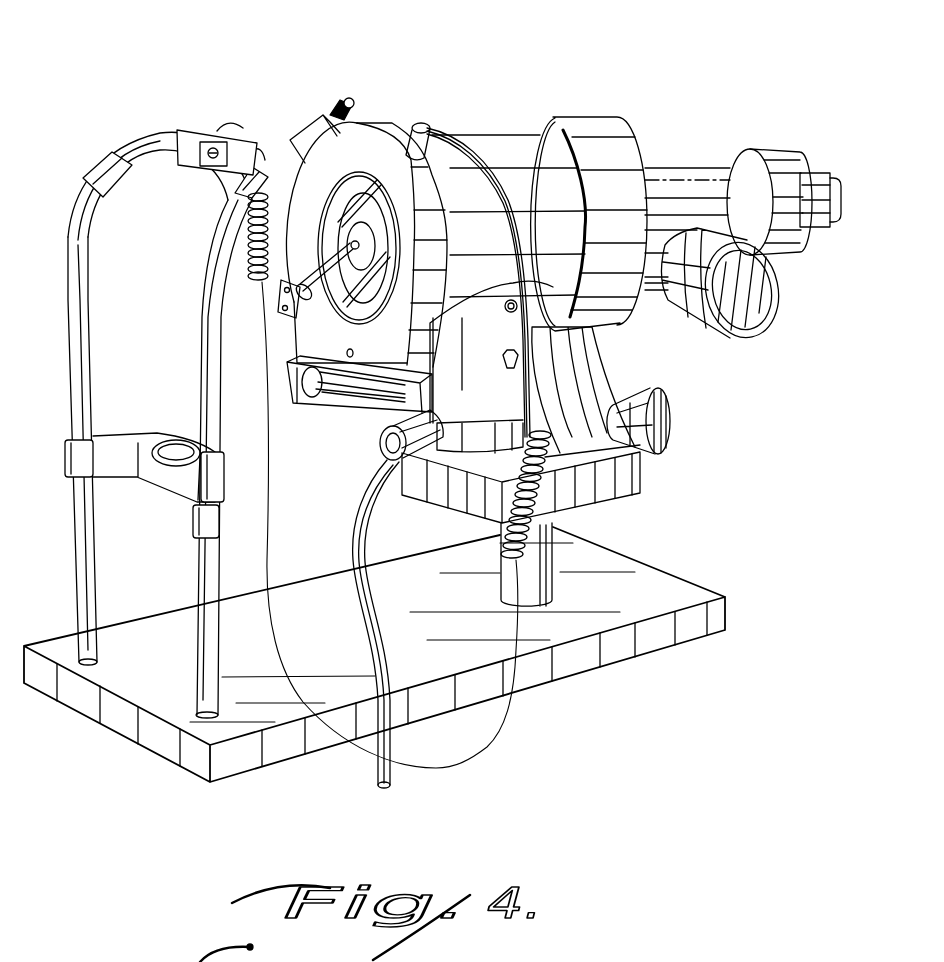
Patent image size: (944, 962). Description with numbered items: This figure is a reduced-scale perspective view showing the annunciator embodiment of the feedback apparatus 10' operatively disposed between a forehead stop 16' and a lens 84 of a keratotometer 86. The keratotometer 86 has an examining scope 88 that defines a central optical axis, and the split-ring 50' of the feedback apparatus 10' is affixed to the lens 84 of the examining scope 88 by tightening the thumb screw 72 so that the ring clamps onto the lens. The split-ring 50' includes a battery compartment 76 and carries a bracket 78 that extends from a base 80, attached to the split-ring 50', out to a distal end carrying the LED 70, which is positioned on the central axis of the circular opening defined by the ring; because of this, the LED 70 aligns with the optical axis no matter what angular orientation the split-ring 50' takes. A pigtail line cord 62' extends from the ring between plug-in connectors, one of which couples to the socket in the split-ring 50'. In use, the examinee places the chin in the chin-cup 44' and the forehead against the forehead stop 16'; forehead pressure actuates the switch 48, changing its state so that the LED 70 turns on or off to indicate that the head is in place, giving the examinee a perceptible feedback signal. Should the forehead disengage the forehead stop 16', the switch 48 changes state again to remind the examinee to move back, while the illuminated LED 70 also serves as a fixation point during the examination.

The feedback apparatus 10' is at (261, 65).
The forehead stop 16' is at (168, 398).
The chin-cup 44' is at (144, 461).
The switch 48 is at (205, 165).
The split-ring 50' is at (366, 247).
The pigtail line cord 62' is at (422, 541).
The LED 70 is at (350, 243).
The thumb screw 72 is at (336, 103).
The battery compartment 76 is at (335, 393).
The bracket 78 is at (311, 295).
The base 80 is at (288, 310).
The lens 84 is at (493, 157).
The keratotometer 86 is at (712, 473).
The examining scope 88 is at (610, 132).